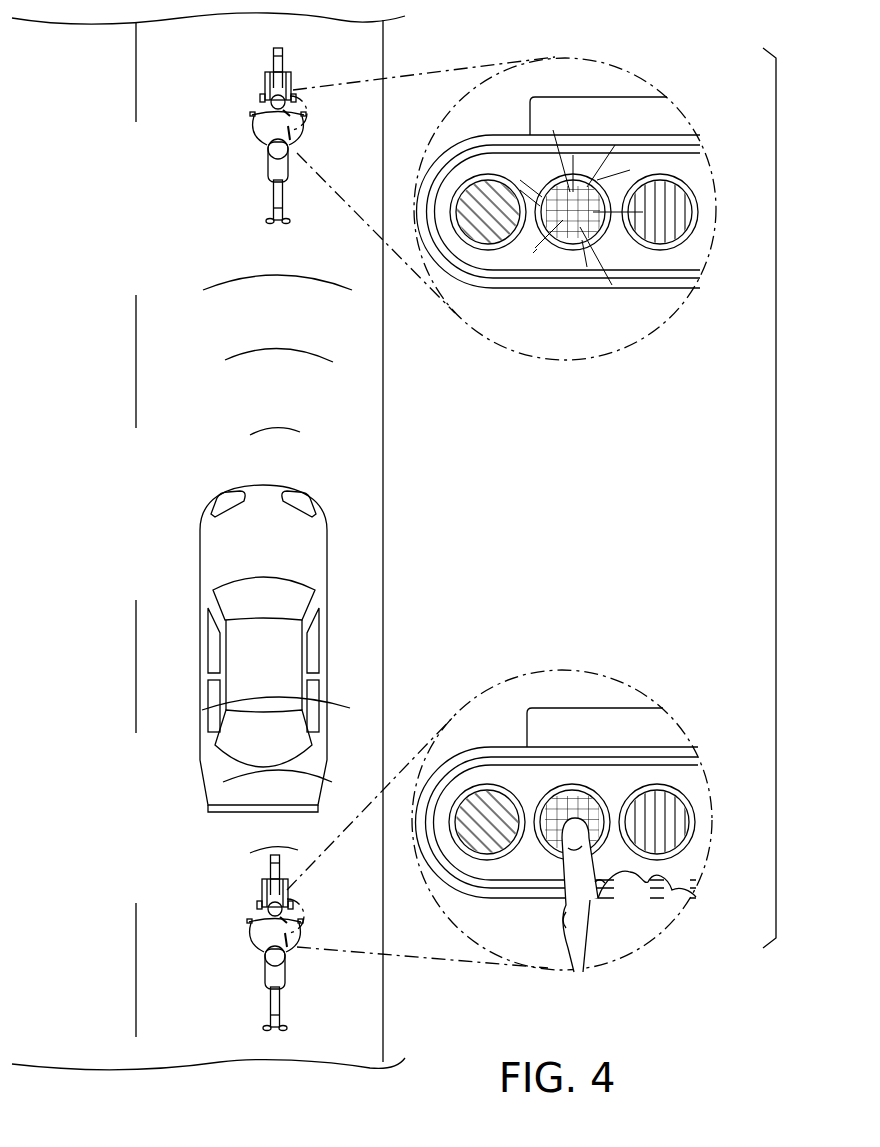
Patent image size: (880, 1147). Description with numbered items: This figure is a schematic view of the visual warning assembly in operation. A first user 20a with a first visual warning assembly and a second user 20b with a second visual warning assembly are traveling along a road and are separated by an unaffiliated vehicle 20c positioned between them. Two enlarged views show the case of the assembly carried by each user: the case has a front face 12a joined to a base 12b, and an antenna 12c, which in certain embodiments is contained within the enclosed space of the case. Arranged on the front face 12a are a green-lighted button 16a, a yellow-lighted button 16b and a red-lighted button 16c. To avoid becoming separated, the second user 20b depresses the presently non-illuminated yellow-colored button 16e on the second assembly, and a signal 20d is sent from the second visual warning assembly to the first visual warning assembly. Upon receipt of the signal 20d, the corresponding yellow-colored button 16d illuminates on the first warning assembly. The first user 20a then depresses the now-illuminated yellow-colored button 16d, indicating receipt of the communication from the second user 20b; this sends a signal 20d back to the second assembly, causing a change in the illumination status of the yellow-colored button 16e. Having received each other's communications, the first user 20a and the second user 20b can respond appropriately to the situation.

The front face 12a is at (697, 172).
The base 12b is at (582, 290).
The antenna 12c is at (543, 110).
The green-lighted button 16a is at (488, 190).
The yellow-lighted button 16b is at (582, 193).
The red-lighted button 16c is at (660, 193).
The yellow-colored button 16d is at (556, 254).
The non-illuminated yellow-colored button 16e is at (553, 867).
The first user 20a is at (262, 156).
The second user 20b is at (267, 963).
The unaffiliated vehicle 20c is at (227, 552).
The signal 20d is at (240, 353).